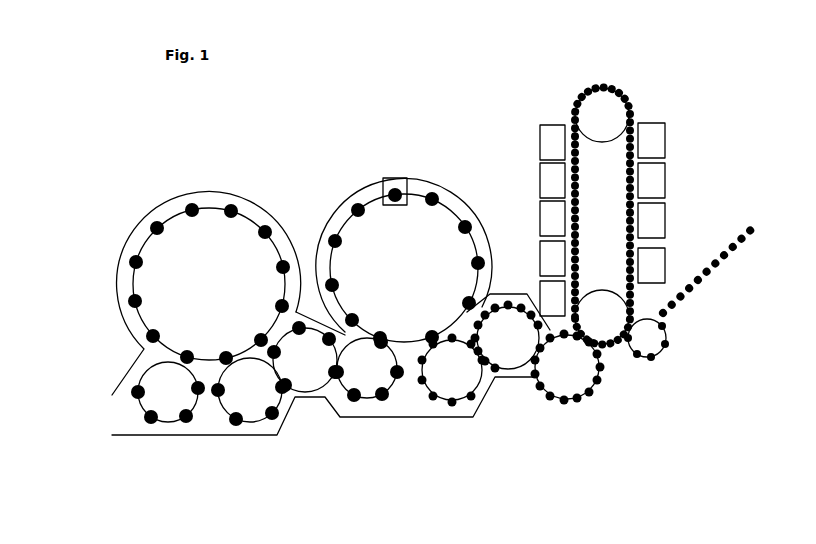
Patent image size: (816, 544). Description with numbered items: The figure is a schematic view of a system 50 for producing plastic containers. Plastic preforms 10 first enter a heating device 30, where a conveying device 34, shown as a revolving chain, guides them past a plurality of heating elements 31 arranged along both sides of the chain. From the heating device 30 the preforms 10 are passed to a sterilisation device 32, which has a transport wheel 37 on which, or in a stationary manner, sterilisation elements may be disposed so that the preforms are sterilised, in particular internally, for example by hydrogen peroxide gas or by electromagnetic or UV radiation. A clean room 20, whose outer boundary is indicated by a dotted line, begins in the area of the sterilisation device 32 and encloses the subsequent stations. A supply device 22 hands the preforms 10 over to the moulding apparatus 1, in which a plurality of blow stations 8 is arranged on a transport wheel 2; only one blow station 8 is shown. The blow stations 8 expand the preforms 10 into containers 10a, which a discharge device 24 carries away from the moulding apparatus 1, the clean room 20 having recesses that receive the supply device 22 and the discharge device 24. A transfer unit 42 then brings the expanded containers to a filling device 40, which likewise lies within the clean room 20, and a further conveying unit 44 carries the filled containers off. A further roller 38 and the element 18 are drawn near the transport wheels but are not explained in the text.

The moulding apparatus 1 is at (387, 158).
The transport wheel 2 is at (445, 250).
The blow station 8 is at (406, 180).
The plastic preform 10 is at (675, 322).
The container 10a is at (388, 402).
The cylinder housing 18 is at (449, 196).
The clean room 20 is at (346, 180).
The supply device 22 is at (470, 380).
The discharge device 24 is at (360, 397).
The heating device 30 is at (562, 84).
The heating element 31 is at (552, 138).
The sterilisation device 32 is at (508, 272).
The conveying device 34 is at (604, 111).
The transport wheel 37 is at (507, 355).
The guide roller 38 is at (558, 378).
The filling device 40 is at (183, 230).
The transfer unit 42 is at (273, 390).
The conveying unit 44 is at (153, 398).
The system 50 is at (333, 90).